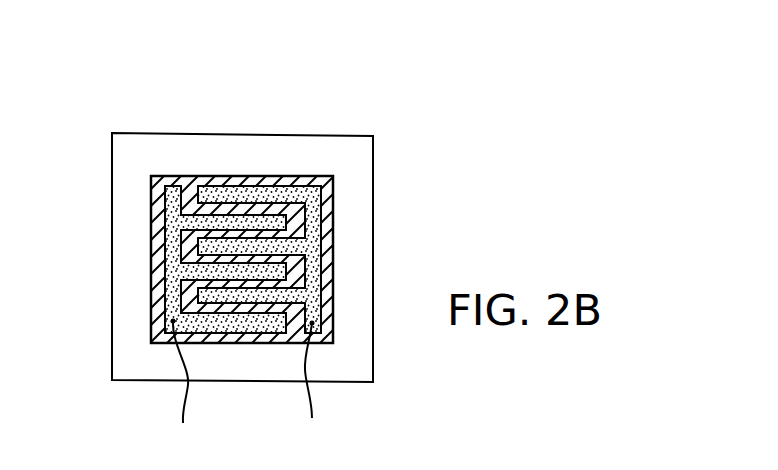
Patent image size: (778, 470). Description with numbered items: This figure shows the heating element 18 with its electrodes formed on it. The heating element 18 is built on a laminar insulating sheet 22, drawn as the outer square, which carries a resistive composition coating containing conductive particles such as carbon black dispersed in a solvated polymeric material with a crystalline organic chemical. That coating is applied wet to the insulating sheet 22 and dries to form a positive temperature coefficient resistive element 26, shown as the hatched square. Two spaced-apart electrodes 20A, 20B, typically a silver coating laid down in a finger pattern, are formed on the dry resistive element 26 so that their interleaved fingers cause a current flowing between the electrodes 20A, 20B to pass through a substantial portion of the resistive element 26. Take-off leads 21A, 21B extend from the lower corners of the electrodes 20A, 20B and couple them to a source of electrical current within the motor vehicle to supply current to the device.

The heating element 18 is at (130, 123).
The laminar insulating sheet 22 is at (218, 142).
The positive temperature coefficient resistive element 26 is at (290, 177).
The electrode 20A is at (165, 203).
The electrode 20B is at (318, 272).
The take-off lead 21A is at (183, 396).
The take-off lead 21B is at (314, 405).